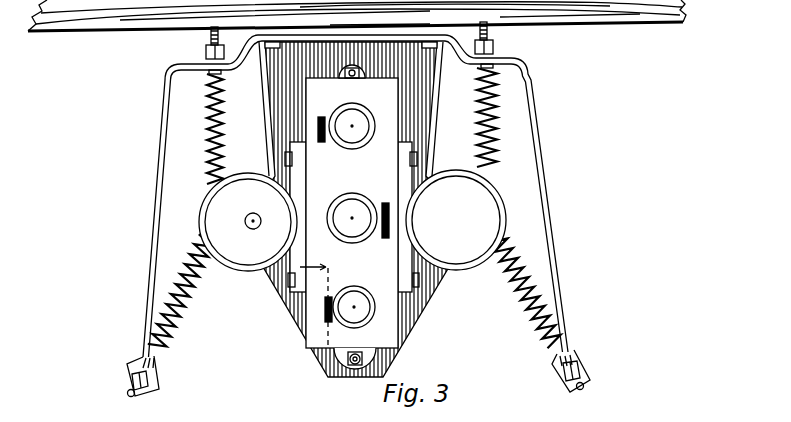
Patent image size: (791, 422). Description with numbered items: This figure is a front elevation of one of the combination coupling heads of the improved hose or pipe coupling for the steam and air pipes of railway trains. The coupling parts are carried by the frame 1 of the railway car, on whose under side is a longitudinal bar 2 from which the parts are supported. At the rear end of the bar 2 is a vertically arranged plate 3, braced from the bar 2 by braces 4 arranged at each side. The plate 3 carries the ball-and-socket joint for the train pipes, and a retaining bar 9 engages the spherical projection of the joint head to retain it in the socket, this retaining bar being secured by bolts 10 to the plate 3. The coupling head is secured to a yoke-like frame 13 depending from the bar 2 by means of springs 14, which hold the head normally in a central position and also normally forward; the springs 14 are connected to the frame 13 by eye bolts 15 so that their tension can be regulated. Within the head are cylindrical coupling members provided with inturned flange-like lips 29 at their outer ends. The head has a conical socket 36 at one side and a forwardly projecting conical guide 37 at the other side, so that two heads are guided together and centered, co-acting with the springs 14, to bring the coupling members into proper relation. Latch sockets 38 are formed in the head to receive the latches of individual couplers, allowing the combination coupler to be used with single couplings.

The frame 1 is at (627, 23).
The longitudinal bar 2 is at (377, 28).
The vertically arranged plate 3 is at (351, 63).
The braces 4 is at (262, 94).
The retaining bar 9 is at (358, 371).
The bolts 10 is at (342, 377).
The yoke-like frame 13 is at (165, 71).
The springs 14 is at (207, 106).
The eye bolts 15 is at (206, 48).
The inturned flange-like lips 29 is at (360, 245).
The conical socket 36 is at (248, 241).
The conical guide 37 is at (470, 274).
The latch sockets 38 is at (327, 312).